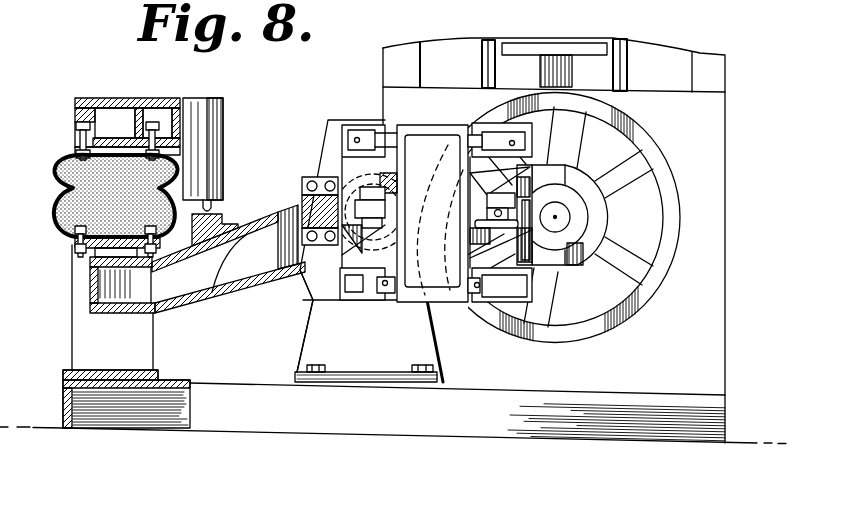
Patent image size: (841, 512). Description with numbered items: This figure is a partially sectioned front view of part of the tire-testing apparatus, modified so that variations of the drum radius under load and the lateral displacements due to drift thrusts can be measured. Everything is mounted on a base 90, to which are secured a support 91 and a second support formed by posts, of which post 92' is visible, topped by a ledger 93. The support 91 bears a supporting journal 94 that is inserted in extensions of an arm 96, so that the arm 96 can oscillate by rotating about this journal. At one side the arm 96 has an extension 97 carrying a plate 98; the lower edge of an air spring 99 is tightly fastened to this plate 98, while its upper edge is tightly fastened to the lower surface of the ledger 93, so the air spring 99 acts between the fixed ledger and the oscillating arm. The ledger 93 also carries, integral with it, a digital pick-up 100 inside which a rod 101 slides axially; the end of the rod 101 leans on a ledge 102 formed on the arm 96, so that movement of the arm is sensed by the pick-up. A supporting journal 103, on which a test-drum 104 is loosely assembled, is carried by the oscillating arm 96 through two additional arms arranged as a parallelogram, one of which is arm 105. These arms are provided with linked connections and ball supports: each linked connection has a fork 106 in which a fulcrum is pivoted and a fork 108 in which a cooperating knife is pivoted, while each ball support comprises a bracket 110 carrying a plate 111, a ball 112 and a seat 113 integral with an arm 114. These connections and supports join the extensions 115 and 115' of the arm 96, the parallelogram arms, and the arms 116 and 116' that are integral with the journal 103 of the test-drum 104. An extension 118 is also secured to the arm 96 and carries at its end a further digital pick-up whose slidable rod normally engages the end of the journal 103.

The base 90 is at (291, 415).
The support 91 is at (428, 343).
The post 92' is at (90, 307).
The ledger 93 is at (120, 98).
The supporting journal 94 is at (352, 192).
The arm 96 is at (246, 284).
The extension 97 is at (90, 311).
The plate 98 is at (88, 261).
The air spring 99 is at (60, 166).
The digital pick-up 100 is at (210, 108).
The rod 101 is at (212, 208).
The ledge 102 is at (228, 222).
The supporting journal 103 is at (572, 218).
The test-drum 104 is at (656, 164).
The additional arm 105 is at (418, 300).
The fork 106 is at (356, 125).
The fork 108 is at (387, 140).
The bracket 110 is at (503, 237).
The plate 111 is at (512, 223).
The ball 112 is at (497, 212).
The seat 113 is at (492, 192).
The arm 114 is at (517, 189).
The extension 115 is at (332, 210).
The extension 115' is at (329, 321).
The arm 116 is at (564, 152).
The arm 116' is at (554, 280).
The extension 118 is at (296, 232).